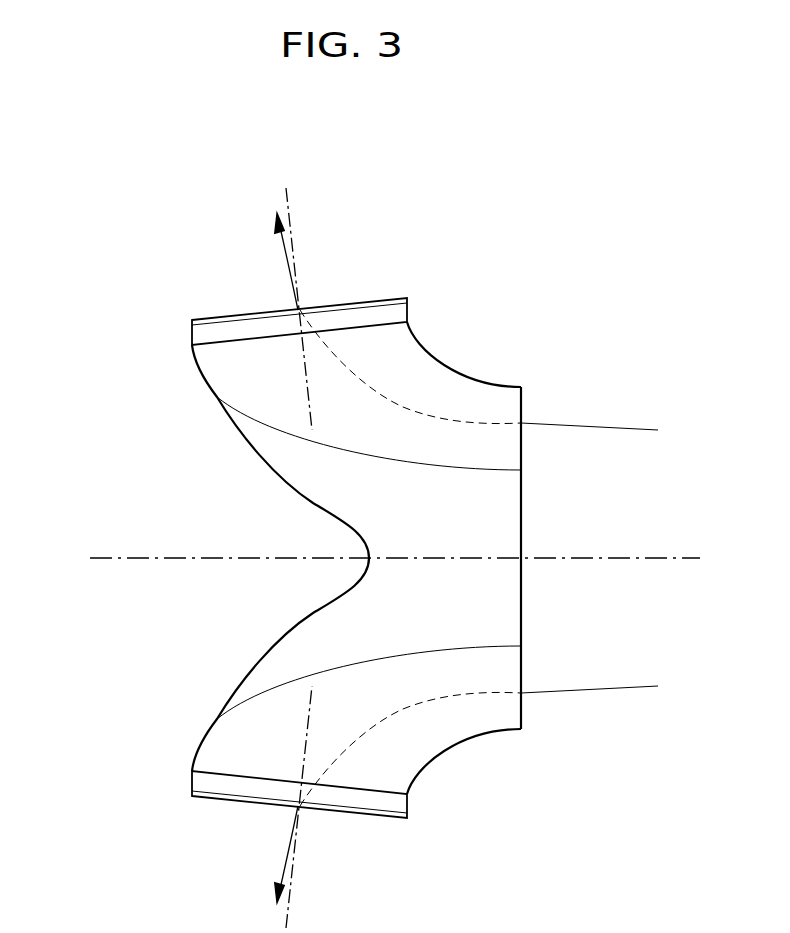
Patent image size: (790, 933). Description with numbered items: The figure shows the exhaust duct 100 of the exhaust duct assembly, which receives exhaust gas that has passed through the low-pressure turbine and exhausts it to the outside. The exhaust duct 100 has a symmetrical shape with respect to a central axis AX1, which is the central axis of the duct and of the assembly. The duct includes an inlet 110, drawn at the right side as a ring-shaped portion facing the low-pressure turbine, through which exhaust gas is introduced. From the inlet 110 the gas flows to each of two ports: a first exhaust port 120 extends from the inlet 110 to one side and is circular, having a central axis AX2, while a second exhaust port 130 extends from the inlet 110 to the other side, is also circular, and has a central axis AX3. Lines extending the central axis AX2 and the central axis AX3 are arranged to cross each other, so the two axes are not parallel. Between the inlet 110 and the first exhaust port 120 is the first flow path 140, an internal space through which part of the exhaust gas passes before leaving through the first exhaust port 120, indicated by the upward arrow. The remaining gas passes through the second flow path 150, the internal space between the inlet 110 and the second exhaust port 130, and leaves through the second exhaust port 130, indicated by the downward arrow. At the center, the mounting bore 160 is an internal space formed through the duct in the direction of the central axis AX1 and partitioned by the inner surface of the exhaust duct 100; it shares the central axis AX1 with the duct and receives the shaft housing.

The exhaust duct 100 is at (642, 199).
The inlet 110 is at (538, 515).
The first exhaust port 120 is at (181, 338).
The second exhaust port 130 is at (182, 778).
The first flow path 140 is at (437, 398).
The second flow path 150 is at (437, 718).
The mounting bore 160 is at (368, 495).
The central axis AX1 is at (395, 576).
The central axis of the first exhaust port AX2 is at (308, 309).
The central axis of the second exhaust port AX3 is at (308, 807).